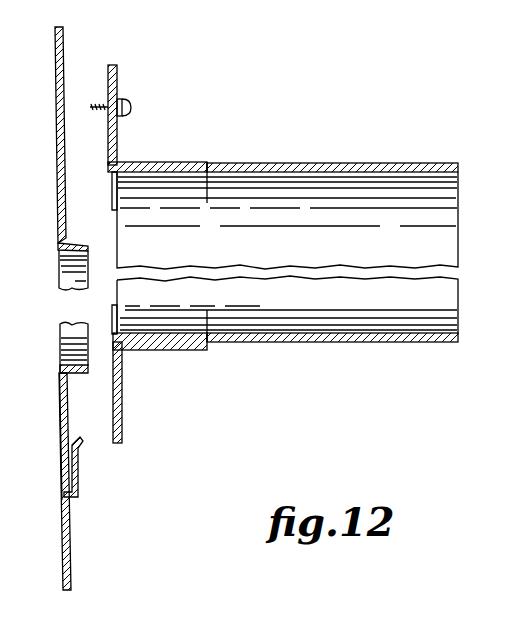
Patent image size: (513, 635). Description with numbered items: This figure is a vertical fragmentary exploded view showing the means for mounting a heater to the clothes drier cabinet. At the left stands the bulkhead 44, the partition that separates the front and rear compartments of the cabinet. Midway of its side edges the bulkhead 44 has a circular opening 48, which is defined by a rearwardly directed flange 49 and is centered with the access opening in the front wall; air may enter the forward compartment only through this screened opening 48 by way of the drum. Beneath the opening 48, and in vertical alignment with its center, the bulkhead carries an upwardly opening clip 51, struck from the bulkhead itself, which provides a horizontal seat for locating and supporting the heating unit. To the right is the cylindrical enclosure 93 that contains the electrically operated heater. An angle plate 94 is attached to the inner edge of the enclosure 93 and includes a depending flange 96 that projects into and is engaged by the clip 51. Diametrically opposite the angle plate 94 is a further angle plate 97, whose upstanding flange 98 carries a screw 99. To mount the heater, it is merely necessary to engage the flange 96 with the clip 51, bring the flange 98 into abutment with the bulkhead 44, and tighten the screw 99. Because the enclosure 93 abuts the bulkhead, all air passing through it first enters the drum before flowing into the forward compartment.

The bulkhead 44 is at (57, 112).
The circular opening 48 is at (66, 348).
The rearwardly directed flange 49 is at (64, 249).
The upwardly opening clip 51 is at (80, 470).
The cylindrical enclosure 93 is at (293, 342).
The angle plate 94 is at (140, 352).
The depending flange 96 is at (122, 436).
The further angle plate 97 is at (156, 162).
The upstanding flange 98 is at (117, 80).
The screw 99 is at (131, 107).